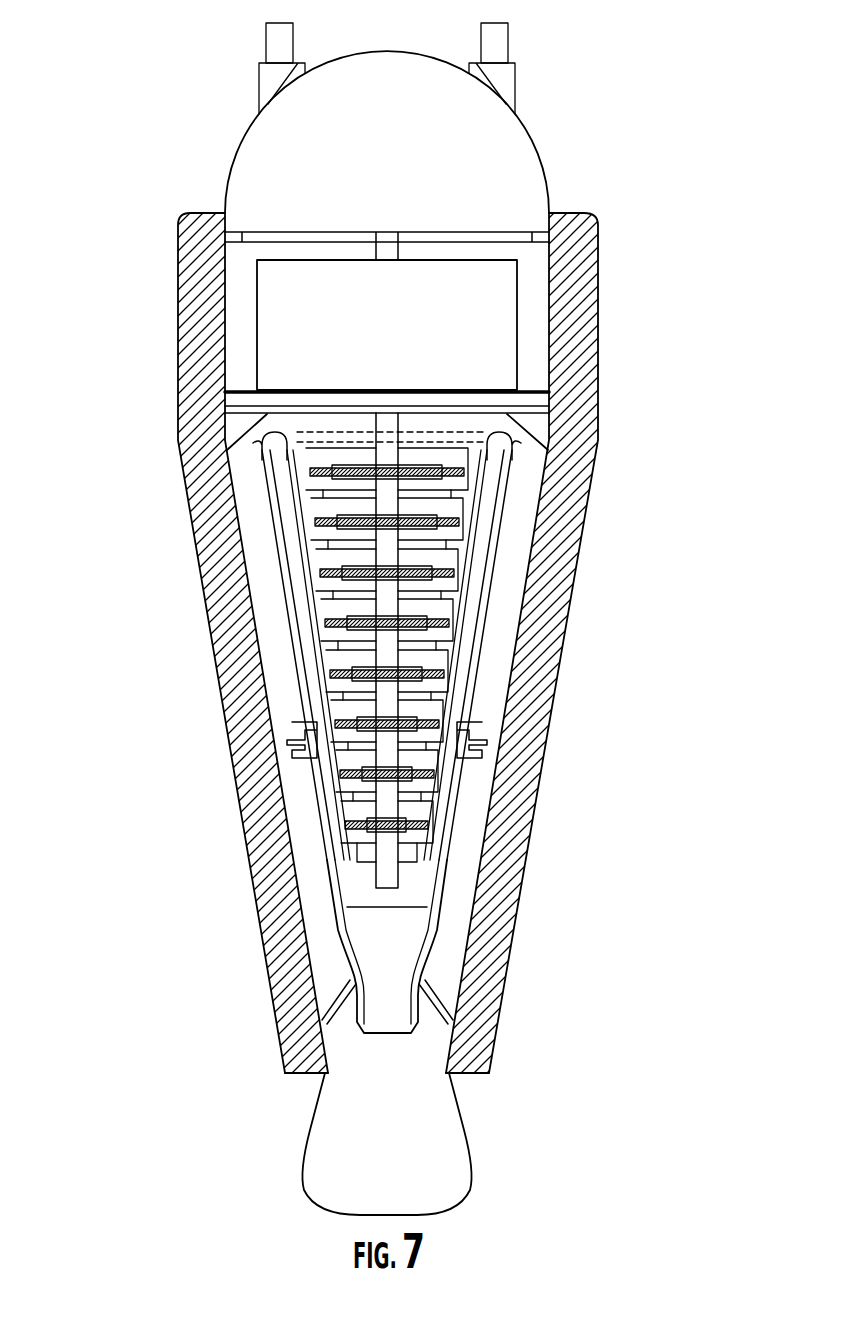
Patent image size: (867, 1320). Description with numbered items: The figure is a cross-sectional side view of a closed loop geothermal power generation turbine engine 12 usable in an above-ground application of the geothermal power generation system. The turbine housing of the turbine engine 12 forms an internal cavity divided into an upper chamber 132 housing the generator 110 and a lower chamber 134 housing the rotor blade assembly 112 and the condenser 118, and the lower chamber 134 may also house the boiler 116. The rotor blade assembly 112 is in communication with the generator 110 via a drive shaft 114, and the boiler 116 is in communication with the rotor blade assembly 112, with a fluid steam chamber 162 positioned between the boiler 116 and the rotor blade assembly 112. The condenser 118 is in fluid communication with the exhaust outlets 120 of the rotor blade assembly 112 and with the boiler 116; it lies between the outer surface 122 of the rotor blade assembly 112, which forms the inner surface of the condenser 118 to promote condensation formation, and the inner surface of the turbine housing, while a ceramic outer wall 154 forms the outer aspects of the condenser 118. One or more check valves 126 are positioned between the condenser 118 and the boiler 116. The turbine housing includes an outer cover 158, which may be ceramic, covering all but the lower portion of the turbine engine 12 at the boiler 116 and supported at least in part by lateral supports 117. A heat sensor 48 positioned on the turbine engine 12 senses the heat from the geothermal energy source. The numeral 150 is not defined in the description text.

The closed loop geothermal power generation turbine engine 12 is at (612, 159).
The heat sensor 48 is at (302, 1076).
The generator 110 is at (492, 327).
The rotor blade assembly 112 is at (330, 636).
The drive shaft 114 is at (388, 880).
The boiler 116 is at (430, 1160).
The lateral supports 117 is at (490, 758).
The condenser 118 is at (280, 702).
The exhaust outlets 120 is at (510, 432).
The outer surface of the rotor blade assembly 122 is at (500, 548).
The check valves 126 is at (348, 984).
The upper chamber 132 is at (532, 280).
The lower chamber 134 is at (528, 473).
The lower disk 150 is at (363, 838).
The ceramic outer wall 154 is at (197, 571).
The outer cover 158 is at (530, 870).
The fluid steam chamber 162 is at (395, 953).